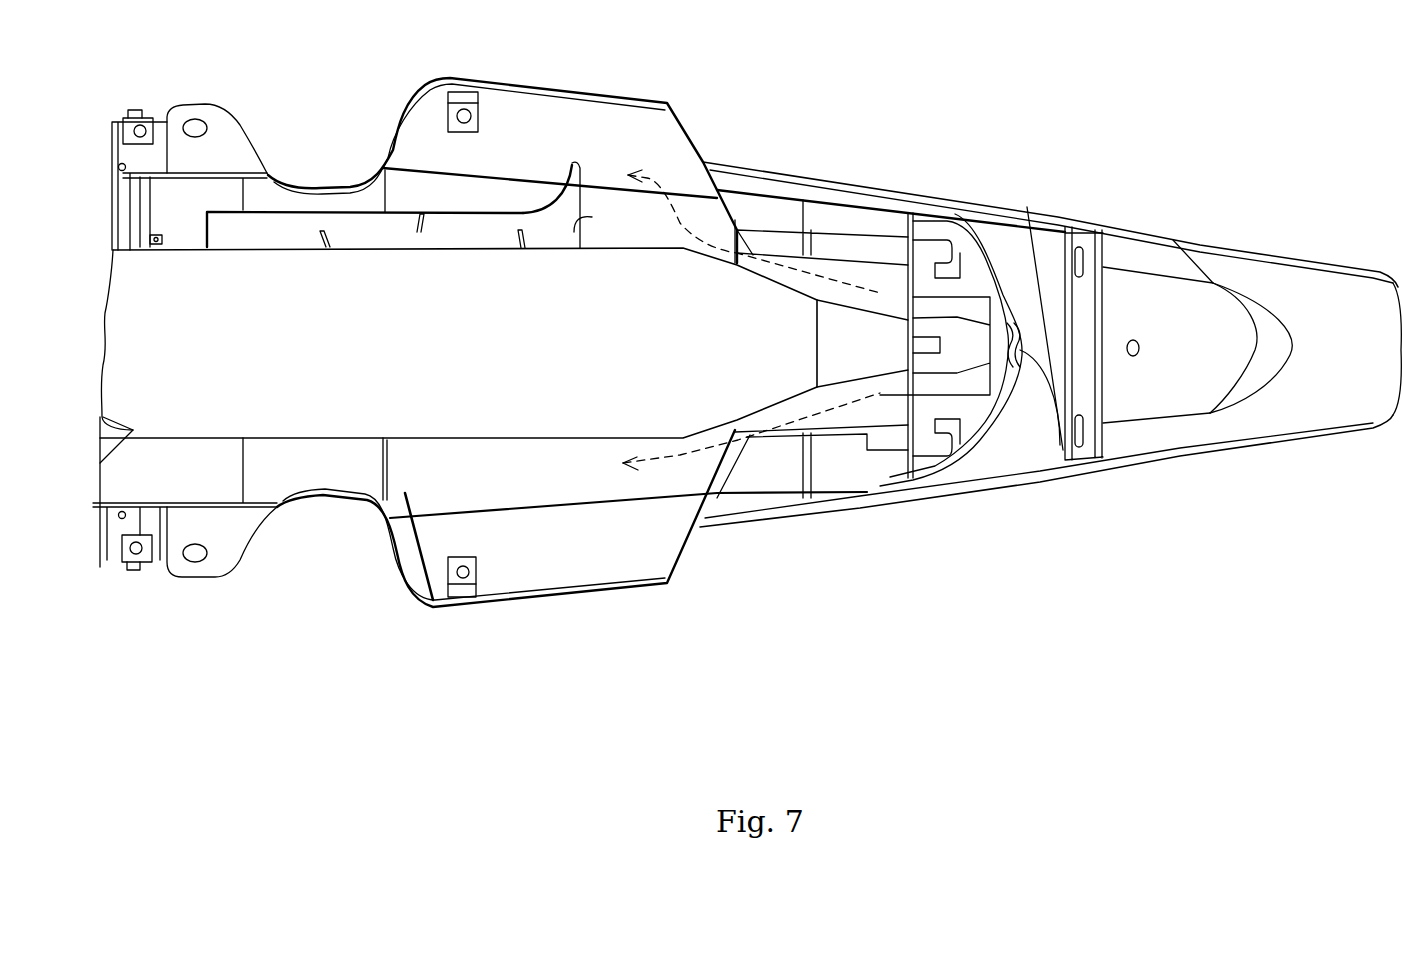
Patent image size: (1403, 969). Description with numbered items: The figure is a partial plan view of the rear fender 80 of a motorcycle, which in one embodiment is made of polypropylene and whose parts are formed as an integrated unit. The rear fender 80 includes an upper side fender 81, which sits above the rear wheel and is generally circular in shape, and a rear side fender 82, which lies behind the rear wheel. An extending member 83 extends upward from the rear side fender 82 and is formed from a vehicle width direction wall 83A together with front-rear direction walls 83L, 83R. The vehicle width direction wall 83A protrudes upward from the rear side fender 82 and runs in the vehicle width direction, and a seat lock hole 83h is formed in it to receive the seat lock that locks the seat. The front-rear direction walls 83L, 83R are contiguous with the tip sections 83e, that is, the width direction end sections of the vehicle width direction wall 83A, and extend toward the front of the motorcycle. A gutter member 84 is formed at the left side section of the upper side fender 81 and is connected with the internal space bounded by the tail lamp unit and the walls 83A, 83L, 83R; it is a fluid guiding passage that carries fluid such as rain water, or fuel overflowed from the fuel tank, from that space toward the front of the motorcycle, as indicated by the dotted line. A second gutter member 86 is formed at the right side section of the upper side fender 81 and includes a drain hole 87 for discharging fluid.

The rear fender 80 is at (1262, 194).
The upper side fender 81 is at (300, 273).
The rear side fender 82 is at (1132, 255).
The extending member 83 is at (988, 226).
The vehicle width direction wall 83A is at (1003, 463).
The tip sections 83e is at (957, 212).
The front-rear direction wall 83R is at (938, 214).
The front-rear direction wall 83L is at (925, 481).
The seat lock hole 83h is at (1053, 447).
The gutter member 84 is at (581, 556).
The gutter member 86 is at (583, 127).
The drain hole 87 is at (155, 234).